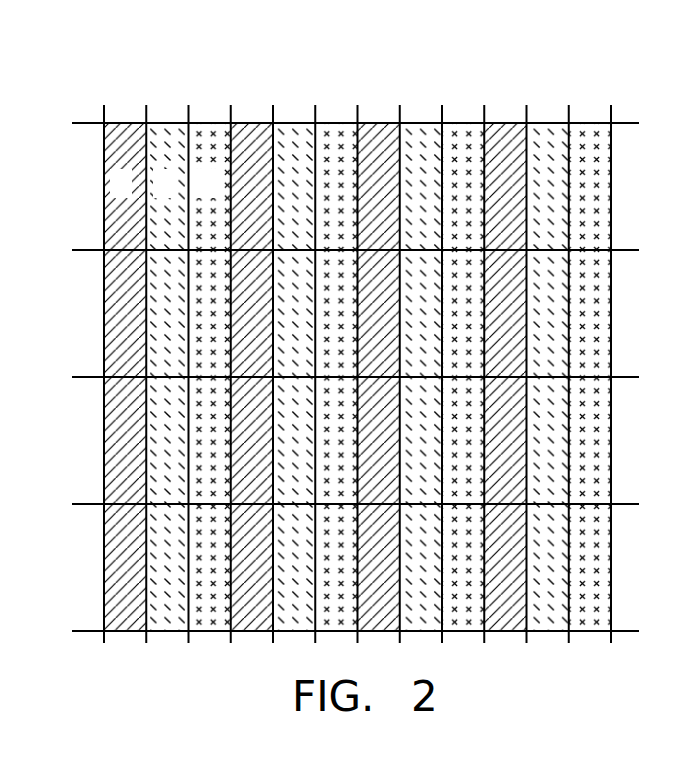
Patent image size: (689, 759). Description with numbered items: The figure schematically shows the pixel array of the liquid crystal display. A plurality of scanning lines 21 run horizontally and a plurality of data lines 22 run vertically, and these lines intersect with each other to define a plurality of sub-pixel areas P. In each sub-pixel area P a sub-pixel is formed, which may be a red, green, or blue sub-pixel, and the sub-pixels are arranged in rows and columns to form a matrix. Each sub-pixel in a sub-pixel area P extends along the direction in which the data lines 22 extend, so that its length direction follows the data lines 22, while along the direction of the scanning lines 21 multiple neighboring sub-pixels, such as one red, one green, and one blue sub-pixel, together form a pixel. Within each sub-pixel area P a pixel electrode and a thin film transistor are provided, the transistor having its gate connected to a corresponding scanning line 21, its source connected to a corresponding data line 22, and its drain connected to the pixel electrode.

The scanning line 21 is at (84, 253).
The data line 22 is at (146, 110).
The sub-pixel area P is at (117, 221).